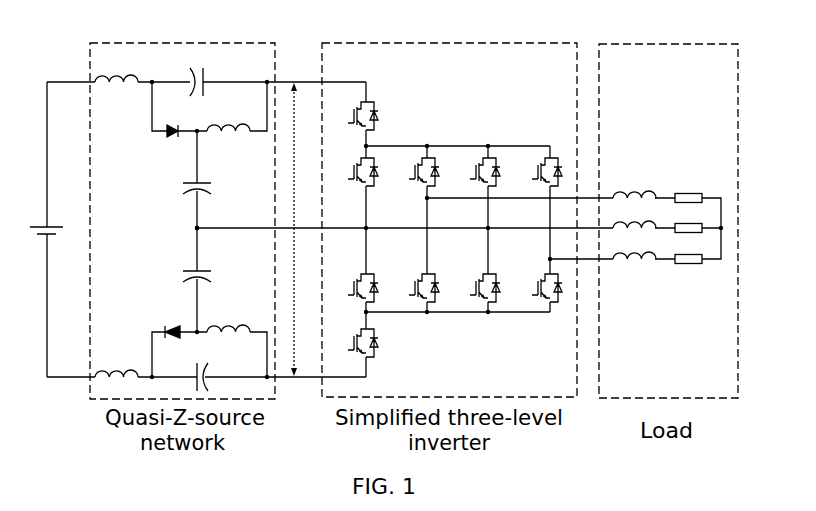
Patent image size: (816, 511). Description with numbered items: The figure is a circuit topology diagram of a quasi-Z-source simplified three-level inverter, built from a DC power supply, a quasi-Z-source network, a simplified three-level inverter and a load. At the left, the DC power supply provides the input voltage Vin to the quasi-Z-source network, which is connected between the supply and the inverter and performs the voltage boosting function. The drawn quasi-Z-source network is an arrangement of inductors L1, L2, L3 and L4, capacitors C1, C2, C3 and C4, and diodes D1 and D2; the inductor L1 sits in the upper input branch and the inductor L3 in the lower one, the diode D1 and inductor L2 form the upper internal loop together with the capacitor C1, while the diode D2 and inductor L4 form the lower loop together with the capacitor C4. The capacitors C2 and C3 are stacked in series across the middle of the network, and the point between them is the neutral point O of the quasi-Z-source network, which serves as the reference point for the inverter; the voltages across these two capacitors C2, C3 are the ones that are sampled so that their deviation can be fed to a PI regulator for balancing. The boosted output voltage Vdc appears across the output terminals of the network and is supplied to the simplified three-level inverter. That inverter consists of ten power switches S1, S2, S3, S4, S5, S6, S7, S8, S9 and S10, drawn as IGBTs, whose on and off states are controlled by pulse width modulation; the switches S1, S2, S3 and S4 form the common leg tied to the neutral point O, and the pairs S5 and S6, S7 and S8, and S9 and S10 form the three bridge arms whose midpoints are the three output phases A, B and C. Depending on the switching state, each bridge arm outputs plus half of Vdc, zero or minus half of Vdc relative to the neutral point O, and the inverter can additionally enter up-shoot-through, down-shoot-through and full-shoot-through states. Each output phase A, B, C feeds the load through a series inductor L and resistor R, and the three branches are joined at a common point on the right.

The input voltage Vin is at (56, 217).
The inductor L1 is at (116, 66).
The inductor L2 is at (228, 116).
The inductor L3 is at (116, 361).
The inductor L4 is at (228, 315).
The capacitor C1 is at (212, 74).
The capacitor C2 is at (210, 191).
The capacitor C3 is at (210, 279).
The capacitor C4 is at (218, 372).
The diode D1 is at (174, 119).
The diode D2 is at (174, 318).
The neutral point O is at (208, 216).
The output voltage Vdc is at (296, 229).
The power switch S1 is at (353, 117).
The power switch S2 is at (353, 174).
The power switch S3 is at (353, 289).
The power switch S4 is at (353, 344).
The power switch S5 is at (415, 174).
The power switch S6 is at (414, 289).
The power switch S7 is at (476, 174).
The power switch S8 is at (476, 289).
The power switch S9 is at (537, 174).
The power switch S10 is at (534, 289).
The phase A output A is at (416, 200).
The phase B output B is at (477, 232).
The phase C output C is at (540, 260).
The load inductor L is at (634, 240).
The load resistor R is at (688, 242).